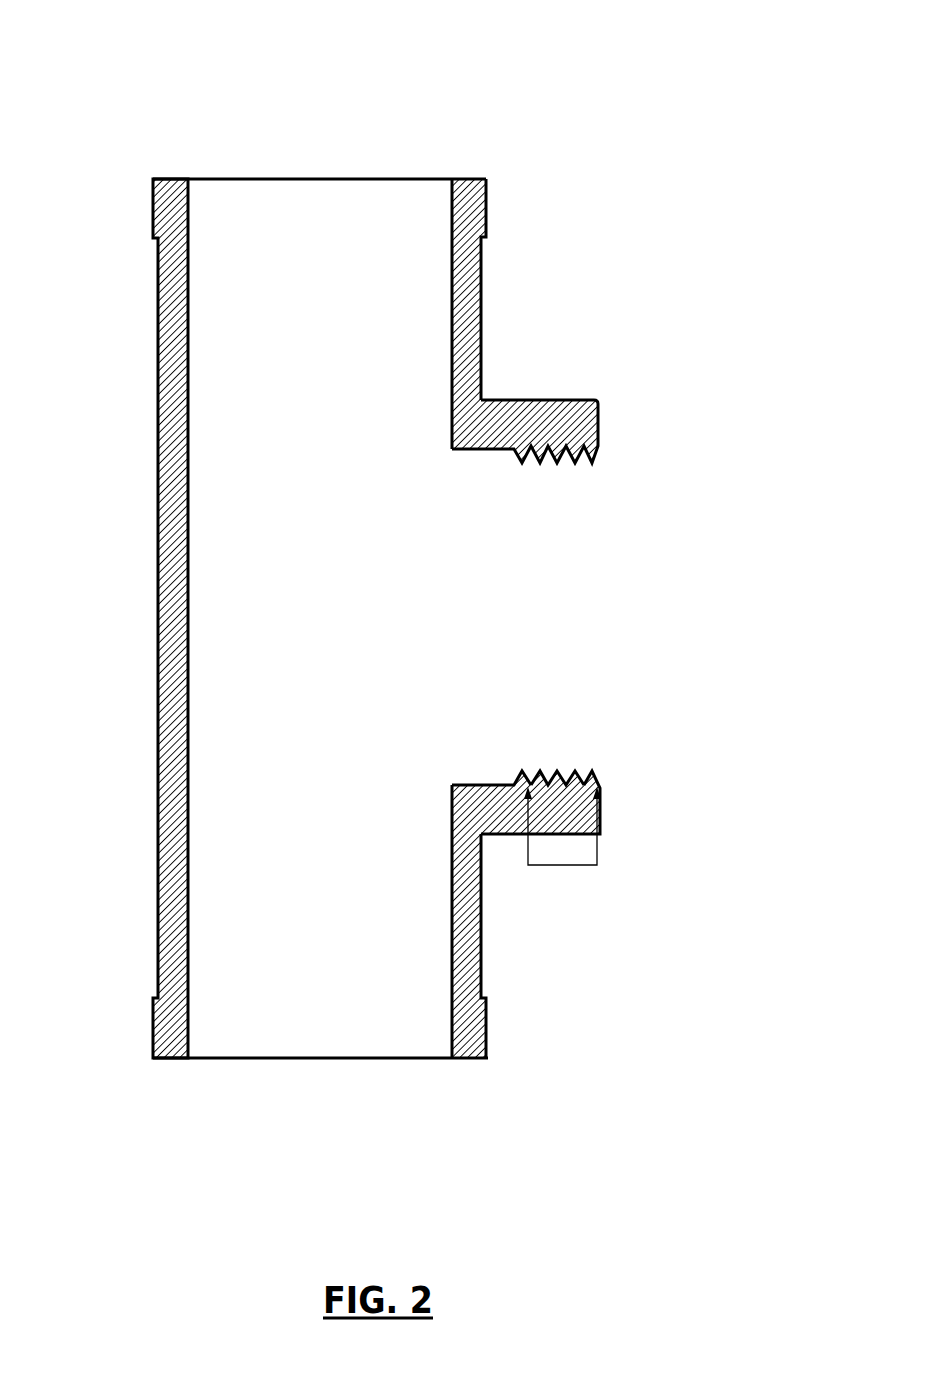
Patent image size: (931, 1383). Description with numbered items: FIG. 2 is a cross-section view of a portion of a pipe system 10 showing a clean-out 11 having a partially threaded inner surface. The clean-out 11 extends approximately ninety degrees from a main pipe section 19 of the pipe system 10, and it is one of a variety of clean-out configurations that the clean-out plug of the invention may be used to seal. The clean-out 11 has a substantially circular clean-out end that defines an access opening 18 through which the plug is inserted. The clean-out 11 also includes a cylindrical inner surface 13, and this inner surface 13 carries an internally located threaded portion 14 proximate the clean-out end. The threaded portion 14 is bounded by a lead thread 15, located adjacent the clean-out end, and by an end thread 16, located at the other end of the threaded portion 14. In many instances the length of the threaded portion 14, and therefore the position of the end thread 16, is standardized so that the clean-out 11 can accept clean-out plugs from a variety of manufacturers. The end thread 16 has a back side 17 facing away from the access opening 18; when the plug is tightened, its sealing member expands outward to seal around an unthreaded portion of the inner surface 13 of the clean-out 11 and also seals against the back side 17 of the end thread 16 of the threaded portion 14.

The pipe system 10 is at (395, 99).
The clean-out 11 is at (542, 357).
The inner surface 13 is at (480, 452).
The threaded portion 14 is at (563, 866).
The lead thread 15 is at (597, 780).
The end thread 16 is at (527, 785).
The back side 17 is at (520, 783).
The access opening 18 is at (602, 569).
The main pipe section 19 is at (215, 306).